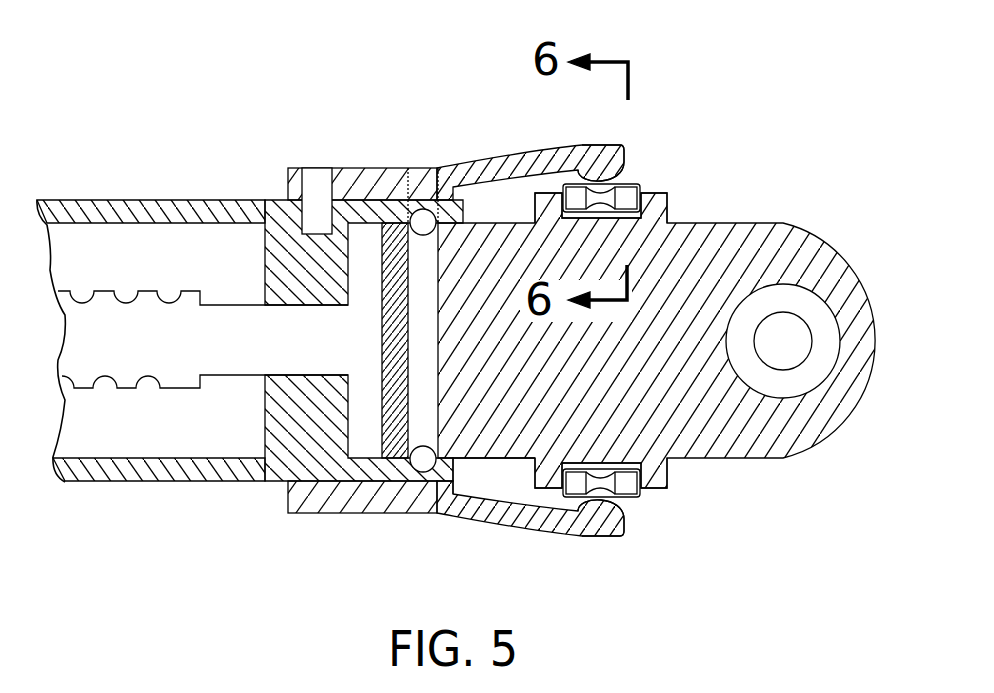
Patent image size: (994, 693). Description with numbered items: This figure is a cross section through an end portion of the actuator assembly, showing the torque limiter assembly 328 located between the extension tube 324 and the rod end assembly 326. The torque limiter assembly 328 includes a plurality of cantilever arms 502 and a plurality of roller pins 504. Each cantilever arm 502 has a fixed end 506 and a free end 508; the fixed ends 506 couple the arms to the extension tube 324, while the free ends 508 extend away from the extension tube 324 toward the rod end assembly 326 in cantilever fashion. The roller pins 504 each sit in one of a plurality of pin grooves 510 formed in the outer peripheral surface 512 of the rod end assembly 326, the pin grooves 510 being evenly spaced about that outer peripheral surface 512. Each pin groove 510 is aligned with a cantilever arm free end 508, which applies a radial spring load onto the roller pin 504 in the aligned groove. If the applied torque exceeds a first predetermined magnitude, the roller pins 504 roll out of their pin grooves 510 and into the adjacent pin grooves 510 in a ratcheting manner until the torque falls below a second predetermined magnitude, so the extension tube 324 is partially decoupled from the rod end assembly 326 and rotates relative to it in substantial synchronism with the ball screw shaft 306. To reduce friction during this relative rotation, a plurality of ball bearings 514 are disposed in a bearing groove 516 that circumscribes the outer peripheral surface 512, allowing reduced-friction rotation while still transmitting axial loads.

The ball screw shaft 306 is at (168, 357).
The extension tube 324 is at (153, 200).
The rod end assembly 326 is at (785, 226).
The torque limiter assembly 328 is at (460, 127).
The cantilever arms 502 is at (503, 158).
The roller pins 504 is at (643, 189).
The fixed end 506 is at (367, 168).
The free end 508 is at (625, 156).
The pin grooves 510 is at (600, 213).
The outer peripheral surface 512 is at (492, 461).
The ball bearings 514 is at (425, 209).
The bearing groove 516 is at (413, 350).